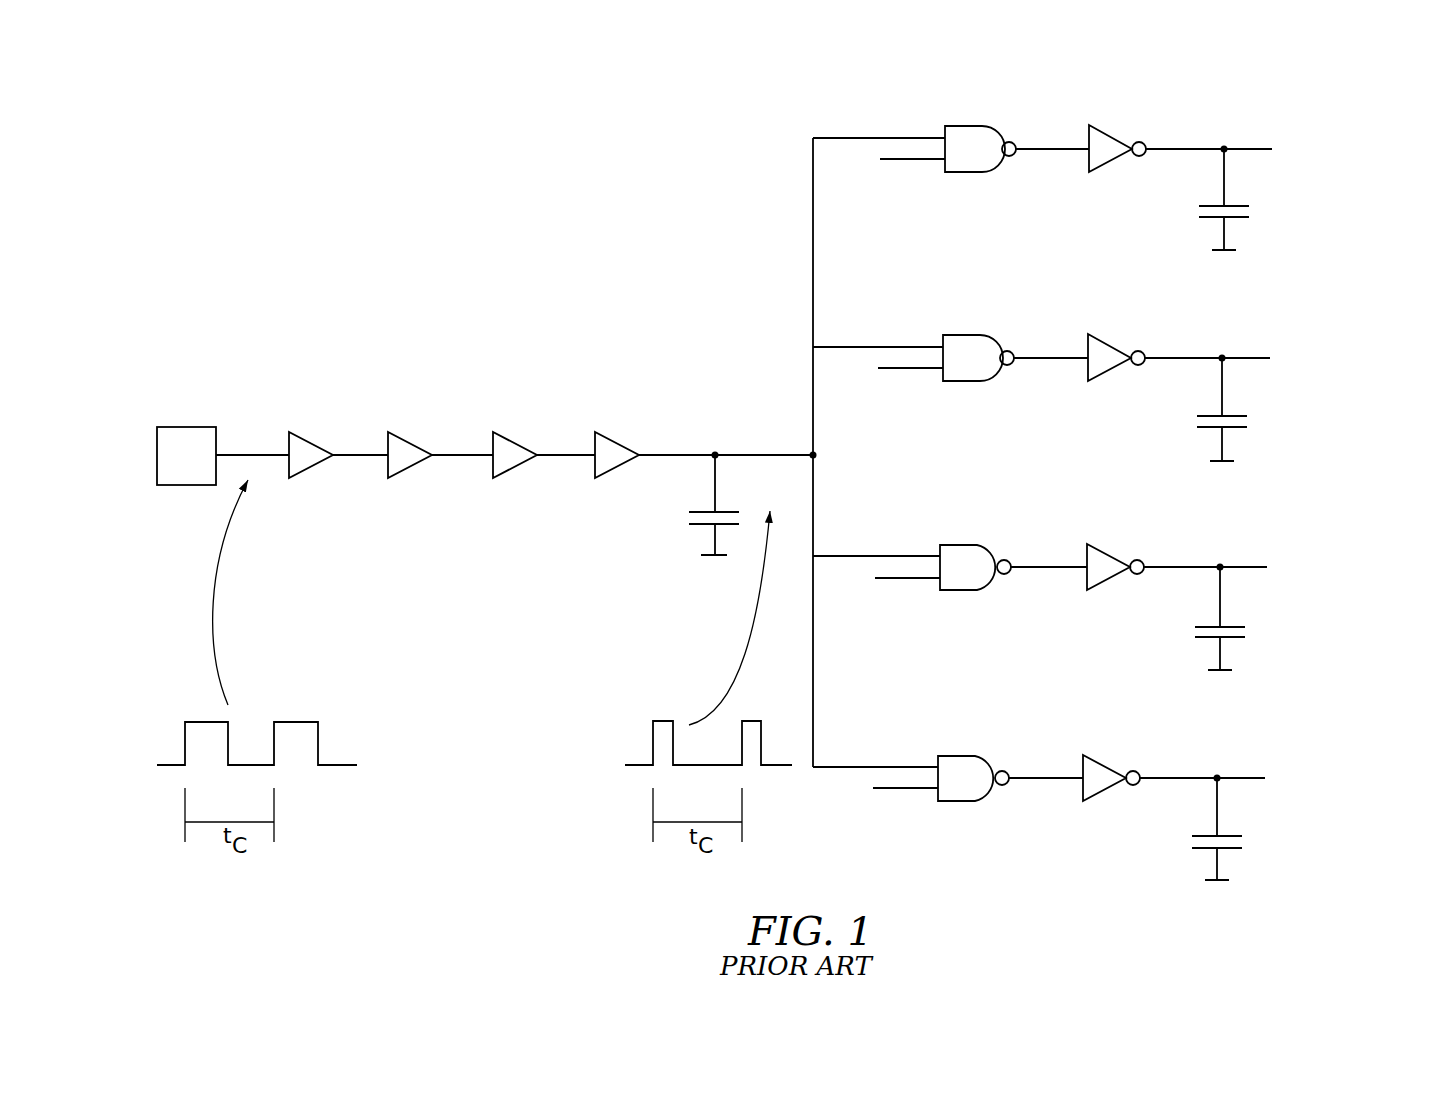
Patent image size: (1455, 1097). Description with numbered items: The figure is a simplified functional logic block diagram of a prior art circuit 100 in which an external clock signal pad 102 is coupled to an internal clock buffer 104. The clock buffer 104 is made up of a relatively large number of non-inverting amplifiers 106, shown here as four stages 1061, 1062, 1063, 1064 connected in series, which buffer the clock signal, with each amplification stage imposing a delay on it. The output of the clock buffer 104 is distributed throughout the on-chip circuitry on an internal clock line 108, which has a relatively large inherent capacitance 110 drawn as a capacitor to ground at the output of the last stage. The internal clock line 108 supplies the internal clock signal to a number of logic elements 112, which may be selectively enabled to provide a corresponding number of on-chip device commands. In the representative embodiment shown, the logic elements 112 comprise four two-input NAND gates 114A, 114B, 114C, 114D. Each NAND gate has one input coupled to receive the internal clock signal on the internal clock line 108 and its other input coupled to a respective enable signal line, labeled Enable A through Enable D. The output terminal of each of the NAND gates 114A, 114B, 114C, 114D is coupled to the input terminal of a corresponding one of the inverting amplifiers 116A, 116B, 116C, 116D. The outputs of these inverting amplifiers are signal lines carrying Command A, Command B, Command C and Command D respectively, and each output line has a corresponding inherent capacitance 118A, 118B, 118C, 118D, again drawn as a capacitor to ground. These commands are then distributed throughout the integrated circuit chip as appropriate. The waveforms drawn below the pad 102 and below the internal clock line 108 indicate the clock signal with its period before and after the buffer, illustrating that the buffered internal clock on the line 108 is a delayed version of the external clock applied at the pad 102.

The prior art circuit 100 is at (479, 683).
The external clock signal pad 102 is at (195, 427).
The internal clock buffer 104 is at (475, 421).
The non-inverting amplifiers 106 is at (475, 471).
The non-inverting amplifier 1061 is at (295, 479).
The non-inverting amplifier 1062 is at (394, 479).
The non-inverting amplifier 1063 is at (499, 479).
The non-inverting amplifier 1064 is at (601, 479).
The internal clock line 108 is at (775, 454).
The inherent capacitance 110 is at (698, 526).
The logic elements 112 is at (1046, 128).
The two-input NAND gate 114A is at (980, 172).
The two-input NAND gate 114B is at (978, 381).
The two-input NAND gate 114C is at (975, 590).
The two-input NAND gate 114D is at (973, 801).
The inverting amplifier 116A is at (1097, 169).
The inverting amplifier 116B is at (1096, 378).
The inverting amplifier 116C is at (1095, 588).
The inverting amplifier 116D is at (1091, 798).
The inherent capacitance 118A is at (1246, 218).
The inherent capacitance 118B is at (1244, 428).
The inherent capacitance 118C is at (1242, 638).
The inherent capacitance 118D is at (1239, 849).